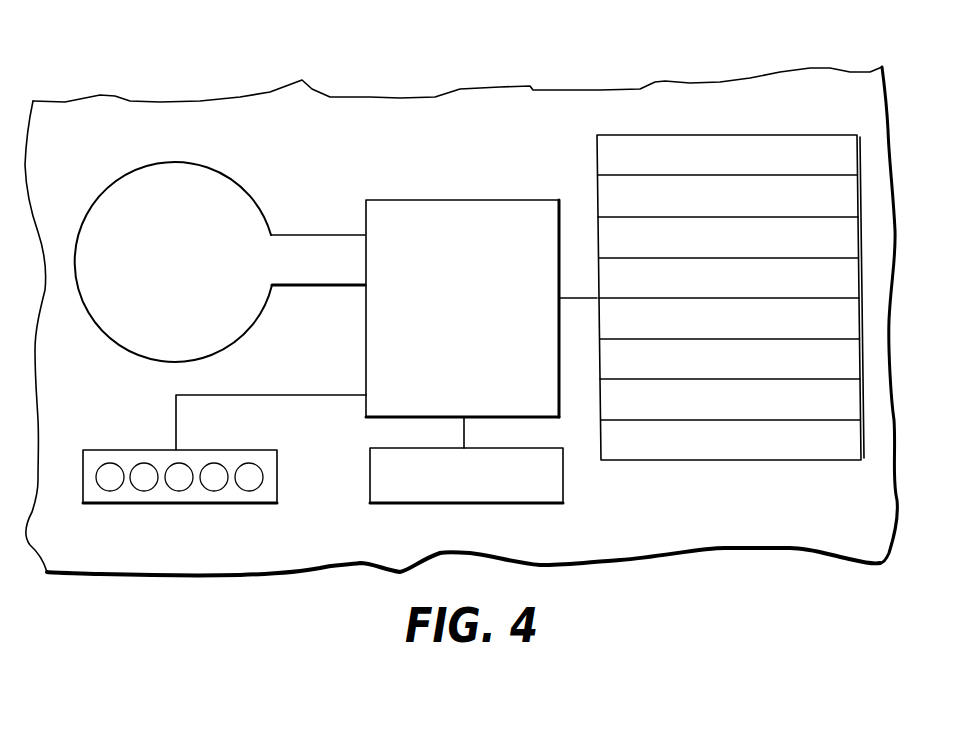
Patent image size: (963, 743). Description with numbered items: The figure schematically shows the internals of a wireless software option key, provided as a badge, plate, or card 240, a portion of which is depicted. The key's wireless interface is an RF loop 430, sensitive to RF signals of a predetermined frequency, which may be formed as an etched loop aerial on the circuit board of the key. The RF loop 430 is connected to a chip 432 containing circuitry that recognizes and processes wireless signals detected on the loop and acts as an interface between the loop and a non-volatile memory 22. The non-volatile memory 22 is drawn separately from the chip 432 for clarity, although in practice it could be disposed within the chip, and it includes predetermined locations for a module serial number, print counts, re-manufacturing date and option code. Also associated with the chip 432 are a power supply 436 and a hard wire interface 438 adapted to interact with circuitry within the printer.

The card 240 is at (117, 103).
The non-volatile memory 22 is at (700, 133).
The RF loop 430 is at (233, 182).
The chip 432 is at (428, 200).
The power supply 436 is at (403, 493).
The hard wire interface 438 is at (143, 500).